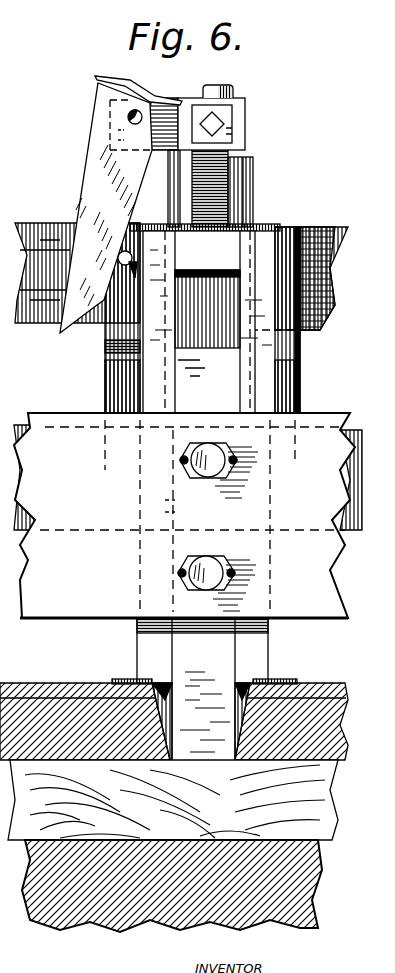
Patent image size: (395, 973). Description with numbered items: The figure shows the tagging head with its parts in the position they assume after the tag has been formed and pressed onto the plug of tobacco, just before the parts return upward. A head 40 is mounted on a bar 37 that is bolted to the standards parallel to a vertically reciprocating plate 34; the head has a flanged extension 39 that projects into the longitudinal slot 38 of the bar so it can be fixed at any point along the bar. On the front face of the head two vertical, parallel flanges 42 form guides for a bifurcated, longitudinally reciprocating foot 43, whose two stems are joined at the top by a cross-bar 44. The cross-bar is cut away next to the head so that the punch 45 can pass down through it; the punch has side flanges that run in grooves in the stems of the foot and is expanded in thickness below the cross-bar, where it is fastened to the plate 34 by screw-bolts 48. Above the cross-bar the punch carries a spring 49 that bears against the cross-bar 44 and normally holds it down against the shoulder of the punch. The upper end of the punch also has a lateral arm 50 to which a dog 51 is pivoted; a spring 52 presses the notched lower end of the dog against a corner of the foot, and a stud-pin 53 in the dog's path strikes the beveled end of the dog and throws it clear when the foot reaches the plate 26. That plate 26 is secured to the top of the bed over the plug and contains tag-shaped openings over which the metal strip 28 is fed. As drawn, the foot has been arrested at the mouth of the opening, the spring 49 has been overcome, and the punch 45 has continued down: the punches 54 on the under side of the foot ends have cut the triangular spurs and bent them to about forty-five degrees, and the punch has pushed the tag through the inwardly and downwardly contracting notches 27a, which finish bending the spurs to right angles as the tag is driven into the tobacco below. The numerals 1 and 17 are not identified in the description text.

The foundation 1 is at (228, 912).
The ballast/ground 17 is at (173, 800).
The plate 26 is at (28, 705).
The contracting notches 27a is at (162, 708).
The sheets or strips 28 is at (298, 685).
The plate 34 is at (184, 515).
The bar 37 is at (328, 240).
The longitudinal slot 38 is at (201, 318).
The flanged extensions 39 is at (9, 380).
The head 40 is at (107, 342).
The vertical and parallel flanges 42 is at (110, 397).
The bifurcated longitudinally-reciprocating foot 43 is at (255, 641).
The cross-bar 44 is at (207, 373).
The punch 45 is at (206, 525).
The screw-bolts 48 is at (205, 562).
The spring 49 is at (230, 181).
The lateral extension or arm 50 is at (172, 104).
The dog 51 is at (95, 181).
The spring 52 is at (125, 83).
The stud-pin 53 is at (119, 255).
The punches 54 is at (163, 682).